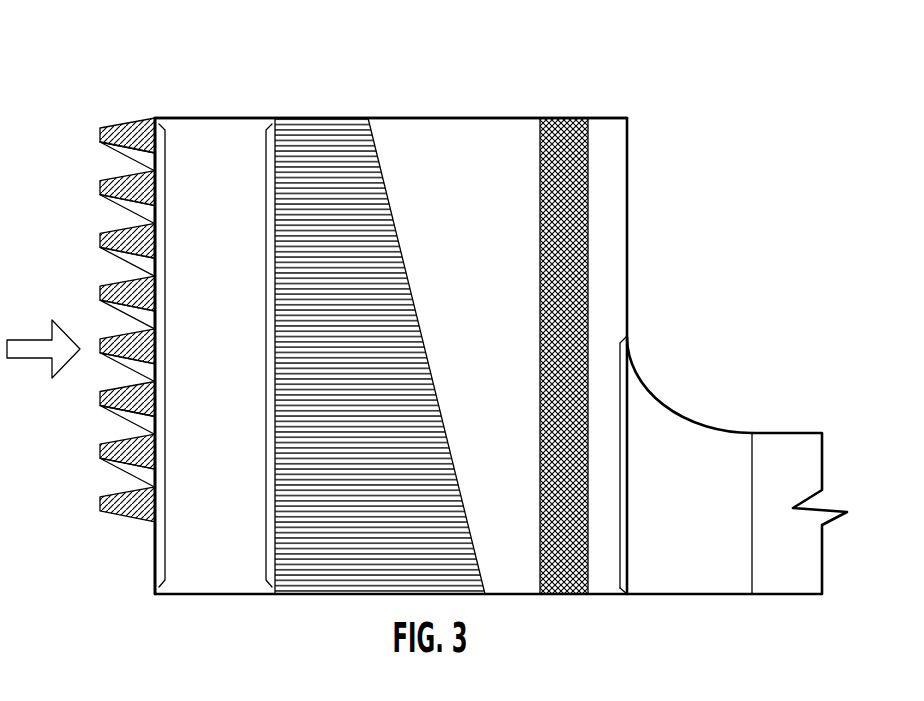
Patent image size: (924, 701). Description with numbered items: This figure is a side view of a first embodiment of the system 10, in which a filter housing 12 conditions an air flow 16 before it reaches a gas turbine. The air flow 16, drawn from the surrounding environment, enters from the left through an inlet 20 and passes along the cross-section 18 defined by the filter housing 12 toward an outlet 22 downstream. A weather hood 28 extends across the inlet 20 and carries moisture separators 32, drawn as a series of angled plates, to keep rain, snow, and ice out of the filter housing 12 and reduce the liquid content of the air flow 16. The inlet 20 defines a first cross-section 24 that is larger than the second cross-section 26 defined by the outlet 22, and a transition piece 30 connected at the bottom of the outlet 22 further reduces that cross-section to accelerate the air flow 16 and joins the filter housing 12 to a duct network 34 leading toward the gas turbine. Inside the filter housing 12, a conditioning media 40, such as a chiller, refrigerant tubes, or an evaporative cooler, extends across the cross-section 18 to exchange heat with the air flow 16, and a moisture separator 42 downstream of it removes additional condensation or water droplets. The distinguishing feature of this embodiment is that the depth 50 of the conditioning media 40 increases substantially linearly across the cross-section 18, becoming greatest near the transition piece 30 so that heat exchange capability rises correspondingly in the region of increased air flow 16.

The system 10 is at (697, 223).
The filter housing 12 is at (487, 118).
The air flow 16 is at (33, 360).
The cross-section 18 is at (266, 349).
The inlet 20 is at (152, 550).
The outlet 22 is at (627, 566).
The first cross-section 24 is at (165, 347).
The second cross-section 26 is at (620, 460).
The weather hood 28 is at (101, 320).
The transition piece 30 is at (723, 431).
The moisture separator 32 is at (119, 199).
The duct network 34 is at (792, 590).
The conditioning media 40 is at (332, 118).
The moisture separator 42 is at (566, 118).
The depth 50 is at (433, 386).